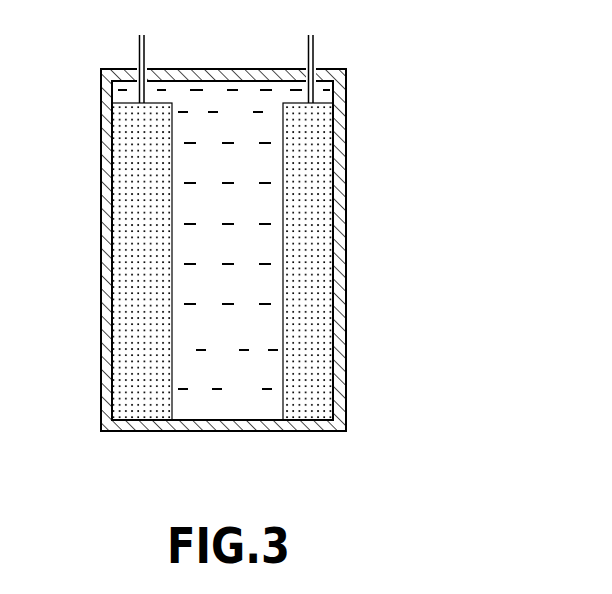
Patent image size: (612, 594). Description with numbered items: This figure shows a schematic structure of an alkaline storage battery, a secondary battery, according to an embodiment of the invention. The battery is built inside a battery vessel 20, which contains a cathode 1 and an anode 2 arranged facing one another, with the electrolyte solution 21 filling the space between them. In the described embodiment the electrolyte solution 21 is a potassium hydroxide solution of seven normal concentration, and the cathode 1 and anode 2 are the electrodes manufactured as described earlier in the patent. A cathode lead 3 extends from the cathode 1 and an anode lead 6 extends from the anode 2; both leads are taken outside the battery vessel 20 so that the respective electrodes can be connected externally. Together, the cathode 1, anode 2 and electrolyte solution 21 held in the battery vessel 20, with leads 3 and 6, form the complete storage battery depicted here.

The cathode 1 is at (122, 351).
The anode 2 is at (307, 341).
The cathode lead 3 is at (145, 60).
The anode lead 6 is at (315, 59).
The battery vessel 20 is at (347, 182).
The electrolyte solution 21 is at (218, 408).